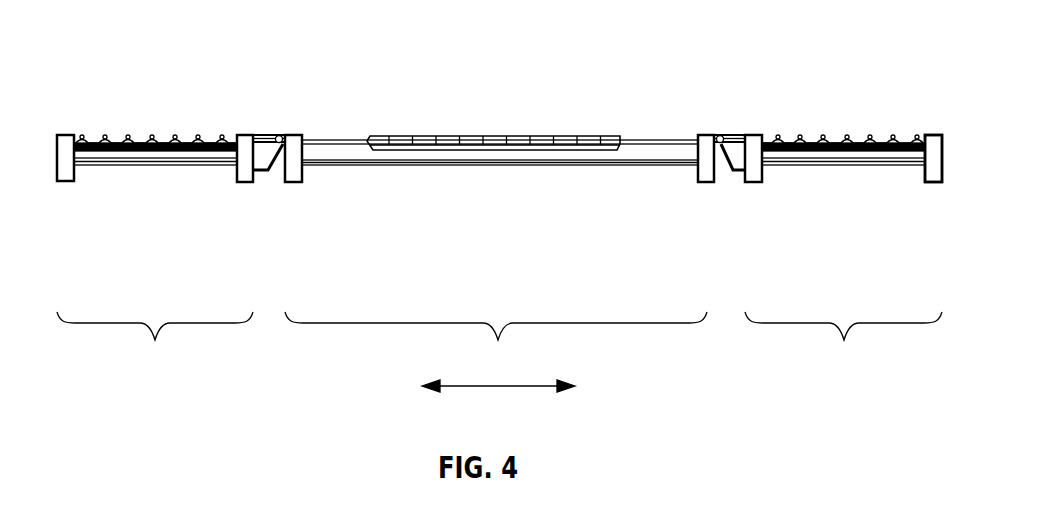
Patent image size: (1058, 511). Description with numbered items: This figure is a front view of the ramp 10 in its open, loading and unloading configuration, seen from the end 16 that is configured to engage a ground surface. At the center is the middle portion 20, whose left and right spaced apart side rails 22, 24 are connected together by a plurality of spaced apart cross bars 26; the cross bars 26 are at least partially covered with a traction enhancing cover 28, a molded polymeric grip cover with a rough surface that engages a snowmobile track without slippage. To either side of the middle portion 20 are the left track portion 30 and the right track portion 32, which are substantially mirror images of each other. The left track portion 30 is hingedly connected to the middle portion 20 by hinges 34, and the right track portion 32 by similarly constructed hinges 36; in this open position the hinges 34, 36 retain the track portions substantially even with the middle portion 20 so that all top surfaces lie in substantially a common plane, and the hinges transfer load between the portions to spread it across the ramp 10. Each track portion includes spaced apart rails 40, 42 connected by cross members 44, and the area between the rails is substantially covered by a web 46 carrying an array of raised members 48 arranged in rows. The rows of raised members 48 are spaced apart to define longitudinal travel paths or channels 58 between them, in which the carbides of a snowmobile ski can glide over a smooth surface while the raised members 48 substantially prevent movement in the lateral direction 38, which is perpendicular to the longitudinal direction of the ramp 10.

The ramp 10 is at (580, 106).
The end 16 is at (931, 107).
The middle portion 20 is at (496, 343).
The left side rail 22 is at (295, 182).
The right side rail 24 is at (707, 182).
The cross bars 26 is at (658, 156).
The traction enhancing cover 28 is at (488, 136).
The left track portion 30 is at (155, 343).
The right track portion 32 is at (843, 343).
The hinges 34 is at (276, 134).
The hinges 36 is at (719, 135).
The lateral direction 38 is at (498, 388).
The rail 40 is at (67, 182).
The rail 42 is at (247, 182).
The cross members 44 is at (148, 157).
The web 46 is at (210, 130).
The raised members 48 is at (175, 138).
The travel paths or channels 58 is at (105, 138).